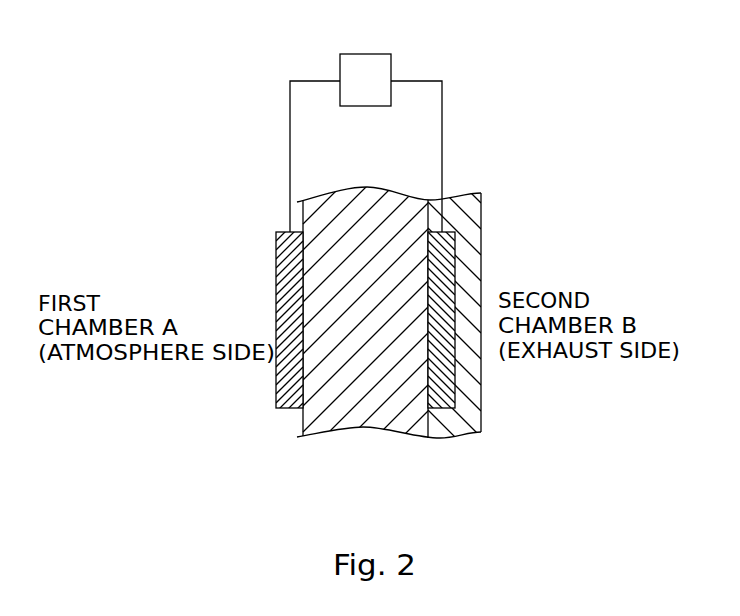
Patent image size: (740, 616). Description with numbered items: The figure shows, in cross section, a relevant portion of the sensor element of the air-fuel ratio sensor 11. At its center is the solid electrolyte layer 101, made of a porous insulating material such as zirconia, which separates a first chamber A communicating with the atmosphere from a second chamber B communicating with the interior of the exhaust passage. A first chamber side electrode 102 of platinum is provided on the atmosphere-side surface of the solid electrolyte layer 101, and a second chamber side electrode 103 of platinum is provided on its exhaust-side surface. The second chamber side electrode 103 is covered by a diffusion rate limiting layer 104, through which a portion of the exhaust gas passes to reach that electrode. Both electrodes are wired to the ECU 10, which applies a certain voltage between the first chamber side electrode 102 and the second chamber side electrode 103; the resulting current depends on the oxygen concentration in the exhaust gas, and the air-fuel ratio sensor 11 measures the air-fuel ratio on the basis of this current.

The ECU 10 is at (391, 62).
The air-fuel ratio sensor 11 is at (236, 208).
The solid electrolyte layer 101 is at (373, 427).
The first chamber side electrode 102 is at (275, 392).
The second chamber side electrode 103 is at (458, 360).
The diffusion rate limiting layer 104 is at (465, 245).